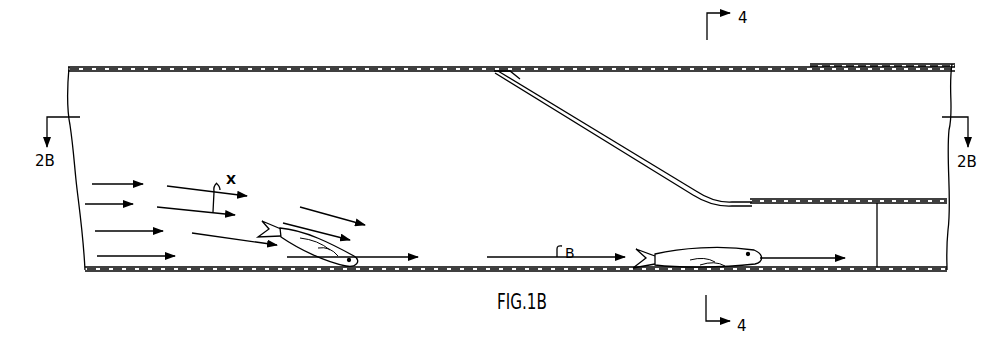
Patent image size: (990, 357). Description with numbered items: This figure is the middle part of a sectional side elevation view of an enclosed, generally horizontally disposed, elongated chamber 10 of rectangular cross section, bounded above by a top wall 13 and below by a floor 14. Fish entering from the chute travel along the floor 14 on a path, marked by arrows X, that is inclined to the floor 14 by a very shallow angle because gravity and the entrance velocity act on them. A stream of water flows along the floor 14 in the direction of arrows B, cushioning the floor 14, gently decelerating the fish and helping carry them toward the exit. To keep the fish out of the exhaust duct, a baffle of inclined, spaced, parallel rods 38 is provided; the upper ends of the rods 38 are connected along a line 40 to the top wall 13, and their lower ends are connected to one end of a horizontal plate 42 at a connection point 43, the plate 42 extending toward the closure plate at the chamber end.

The chamber 10 is at (357, 67).
The top wall 13 is at (134, 69).
The floor 14 is at (458, 258).
The inclined, spaced, parallel rods 38 is at (604, 137).
The line 40 is at (503, 70).
The horizontal plate 42 is at (833, 199).
The connection point 43 is at (743, 202).